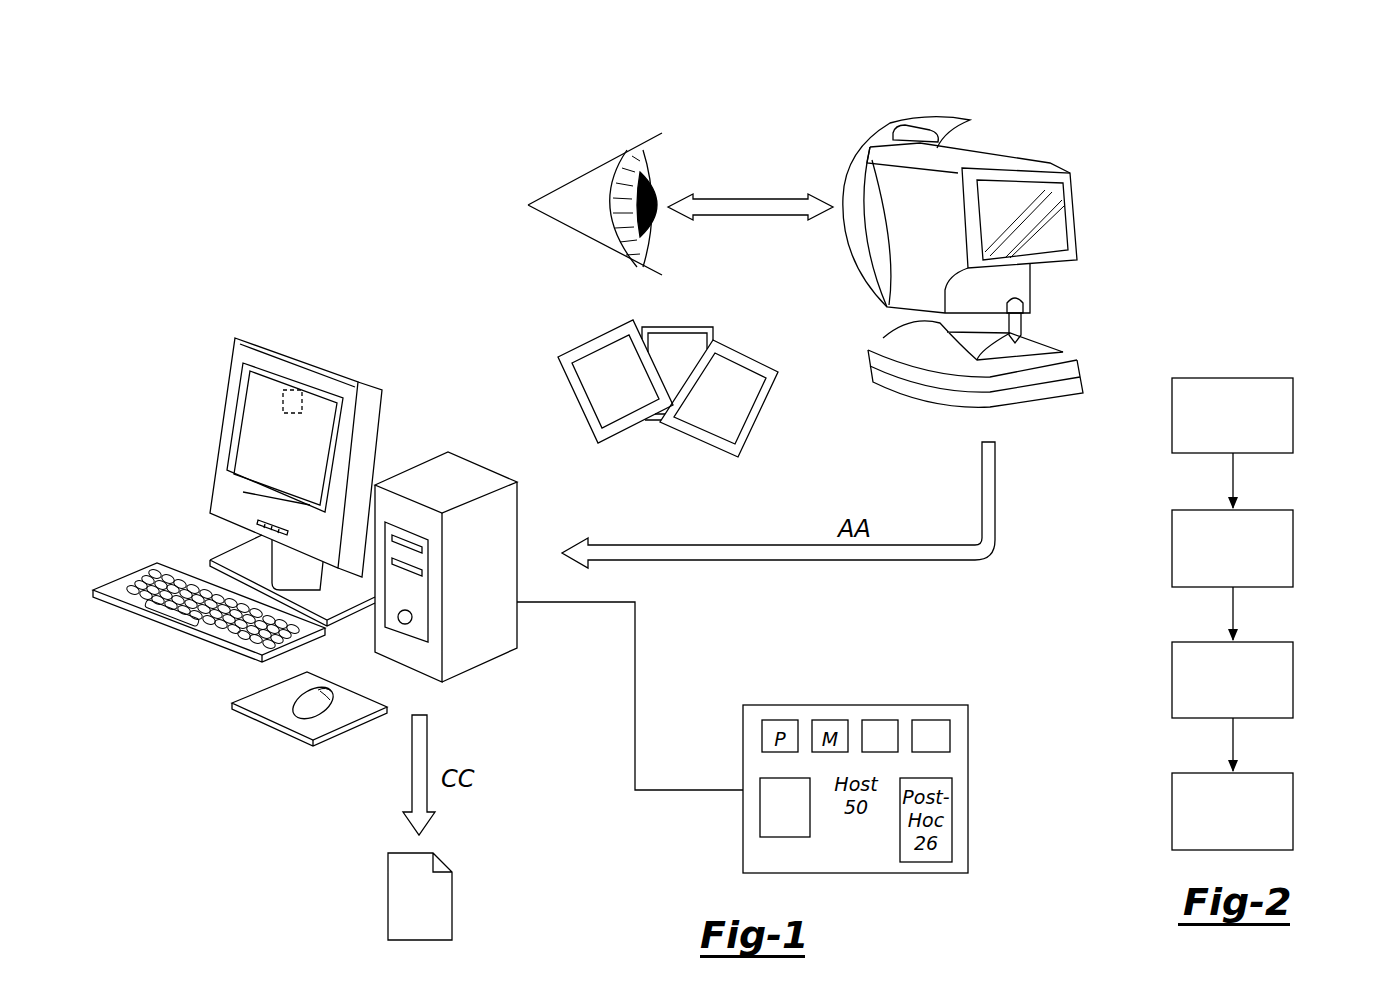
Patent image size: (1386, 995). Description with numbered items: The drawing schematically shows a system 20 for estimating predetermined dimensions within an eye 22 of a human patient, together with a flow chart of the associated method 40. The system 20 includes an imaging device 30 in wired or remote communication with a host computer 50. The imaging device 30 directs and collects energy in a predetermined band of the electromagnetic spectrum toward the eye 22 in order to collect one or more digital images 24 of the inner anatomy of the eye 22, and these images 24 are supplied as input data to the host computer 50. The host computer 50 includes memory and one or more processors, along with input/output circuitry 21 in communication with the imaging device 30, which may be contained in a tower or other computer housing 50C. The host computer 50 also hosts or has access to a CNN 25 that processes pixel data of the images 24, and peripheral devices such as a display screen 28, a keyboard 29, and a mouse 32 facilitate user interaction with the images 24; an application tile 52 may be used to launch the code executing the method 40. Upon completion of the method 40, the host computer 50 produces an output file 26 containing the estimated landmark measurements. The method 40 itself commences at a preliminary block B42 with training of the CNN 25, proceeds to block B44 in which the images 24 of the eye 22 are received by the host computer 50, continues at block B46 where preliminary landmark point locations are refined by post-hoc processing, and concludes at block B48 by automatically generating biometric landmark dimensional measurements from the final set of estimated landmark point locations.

In FIG. 1, the system 20 is at (1072, 87).
In FIG. 1, the eye 22 is at (568, 146).
In FIG. 1, the digital images 24 is at (533, 323).
In FIG. 1, the imaging device 30 is at (1072, 156).
In FIG. 1, the host computer 50 is at (228, 303).
In FIG. 2, the host computer 50 is at (1275, 333).
In FIG. 1, the display screen 28 is at (263, 428).
In FIG. 1, the application tile 52 is at (283, 383).
In FIG. 1, the keyboard 29 is at (123, 572).
In FIG. 1, the mouse 32 is at (303, 703).
In FIG. 1, the computer housing 50C is at (502, 512).
In FIG. 1, the output file 26 is at (388, 902).
In FIG. 1, the input/output circuitry 21 is at (932, 720).
In FIG. 1, the convolutional neural network 25 is at (785, 807).
In FIG. 1, the deep-learning method 40 is at (880, 736).
In FIG. 2, the training block B42 is at (1293, 417).
In FIG. 2, the image receiving block B44 is at (1293, 548).
In FIG. 2, the post-hoc processing block B46 is at (1293, 682).
In FIG. 2, the measurement generation block B48 is at (1293, 813).